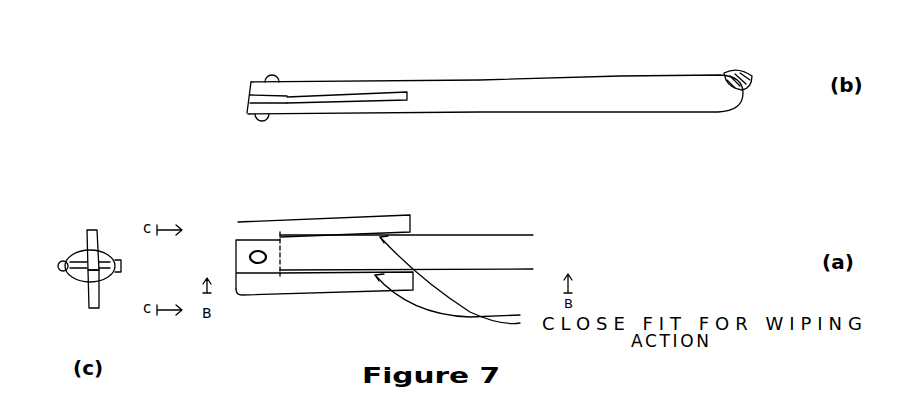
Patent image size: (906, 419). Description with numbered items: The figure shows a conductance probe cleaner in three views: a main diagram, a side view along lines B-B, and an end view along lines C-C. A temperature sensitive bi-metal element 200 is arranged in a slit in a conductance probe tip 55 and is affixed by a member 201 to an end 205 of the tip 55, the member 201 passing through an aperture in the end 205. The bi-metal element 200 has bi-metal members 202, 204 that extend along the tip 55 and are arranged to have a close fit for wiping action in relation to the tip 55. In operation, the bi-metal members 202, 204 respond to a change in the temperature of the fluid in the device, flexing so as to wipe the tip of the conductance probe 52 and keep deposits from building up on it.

The conductance probe tip 55 is at (648, 86).
The end of conductance probe tip 205 is at (240, 68).
The bi-metal member 204 is at (367, 95).
The bi-metal member 202 is at (335, 222).
The member 201 is at (274, 77).
The temperature sensitive bi-metal element 200 is at (290, 297).
The conductance probe 52 is at (68, 284).